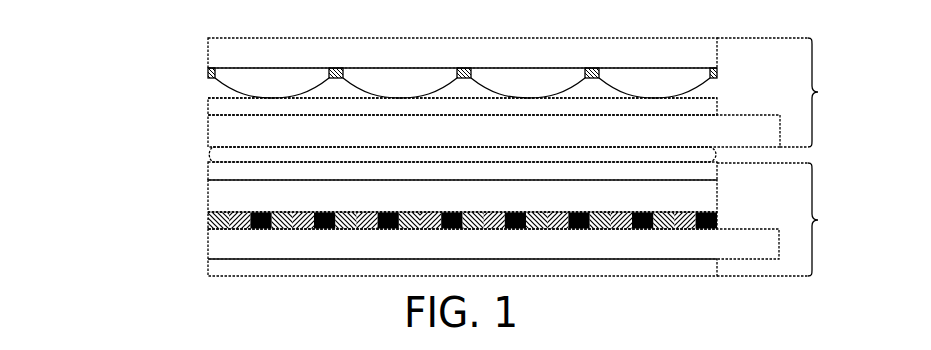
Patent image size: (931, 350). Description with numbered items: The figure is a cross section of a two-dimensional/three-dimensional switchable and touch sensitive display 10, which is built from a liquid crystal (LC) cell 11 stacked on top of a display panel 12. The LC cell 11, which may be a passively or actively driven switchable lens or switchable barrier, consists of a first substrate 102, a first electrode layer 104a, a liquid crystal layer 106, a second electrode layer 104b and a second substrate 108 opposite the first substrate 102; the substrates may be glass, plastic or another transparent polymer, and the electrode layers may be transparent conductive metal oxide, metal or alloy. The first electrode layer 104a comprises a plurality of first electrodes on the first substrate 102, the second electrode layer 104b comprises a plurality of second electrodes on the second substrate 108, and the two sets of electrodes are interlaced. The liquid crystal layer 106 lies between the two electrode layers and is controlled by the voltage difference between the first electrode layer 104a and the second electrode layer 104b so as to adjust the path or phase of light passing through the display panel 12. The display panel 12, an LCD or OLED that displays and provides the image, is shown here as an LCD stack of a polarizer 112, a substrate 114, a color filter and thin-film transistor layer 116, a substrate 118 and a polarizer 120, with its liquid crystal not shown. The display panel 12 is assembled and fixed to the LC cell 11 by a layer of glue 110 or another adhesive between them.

The 2D/3D switchable and touch sensitive display 10 is at (73, 25).
The liquid crystal (LC) cell 11 is at (785, 92).
The display panel 12 is at (785, 219).
The first substrate 102 is at (218, 54).
The first electrode layer 104a is at (208, 76).
The second electrode layer 104b is at (216, 108).
The liquid crystal layer 106 is at (218, 94).
The second substrate 108 is at (222, 130).
The glue 110 is at (210, 156).
The polarizer 112 is at (218, 172).
The substrate 114 is at (222, 196).
The color filter and thin-film transistor 116 is at (210, 220).
The substrate 118 is at (222, 243).
The polarizer 120 is at (220, 268).